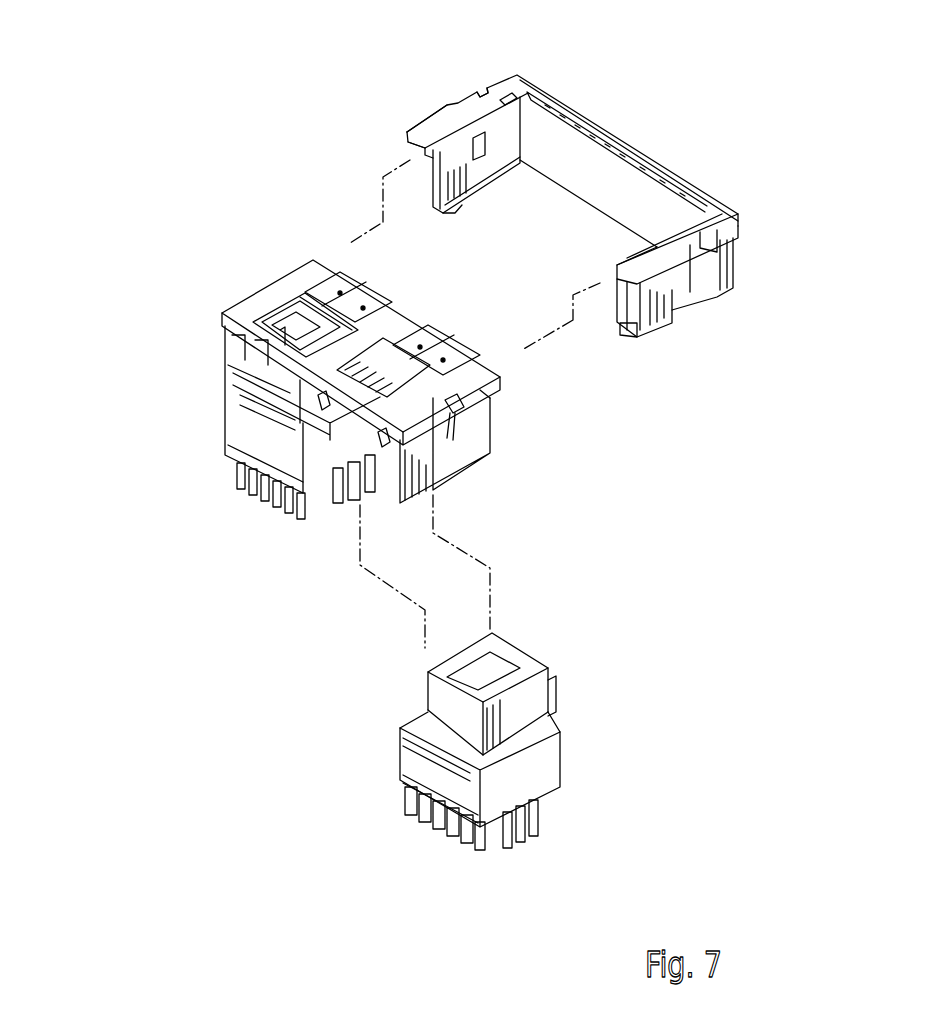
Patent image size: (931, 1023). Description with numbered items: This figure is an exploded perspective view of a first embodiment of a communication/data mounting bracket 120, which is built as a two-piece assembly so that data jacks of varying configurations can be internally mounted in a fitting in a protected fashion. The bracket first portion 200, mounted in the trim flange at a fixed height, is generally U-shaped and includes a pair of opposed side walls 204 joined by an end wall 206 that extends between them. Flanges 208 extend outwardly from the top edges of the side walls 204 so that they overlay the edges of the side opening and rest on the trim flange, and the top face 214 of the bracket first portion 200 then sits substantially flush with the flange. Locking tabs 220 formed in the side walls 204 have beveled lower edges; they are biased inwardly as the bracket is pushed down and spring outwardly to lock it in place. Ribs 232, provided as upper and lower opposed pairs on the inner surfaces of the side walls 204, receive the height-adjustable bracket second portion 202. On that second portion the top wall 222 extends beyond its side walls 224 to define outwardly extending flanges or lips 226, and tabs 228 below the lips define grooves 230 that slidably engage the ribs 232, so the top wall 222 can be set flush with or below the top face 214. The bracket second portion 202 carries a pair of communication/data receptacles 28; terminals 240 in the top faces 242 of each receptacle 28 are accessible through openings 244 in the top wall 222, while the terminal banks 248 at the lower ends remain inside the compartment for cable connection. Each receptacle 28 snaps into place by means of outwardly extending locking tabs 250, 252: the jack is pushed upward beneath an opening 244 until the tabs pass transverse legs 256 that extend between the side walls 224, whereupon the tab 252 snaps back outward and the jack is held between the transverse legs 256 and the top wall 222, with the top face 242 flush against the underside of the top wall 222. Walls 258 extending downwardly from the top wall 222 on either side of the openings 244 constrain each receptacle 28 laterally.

The mounting bracket 120 is at (238, 514).
The bracket first portion 200 is at (668, 165).
The bracket second portion 202 is at (382, 543).
The side walls 204 is at (432, 150).
The end wall 206 is at (603, 170).
The flanges 208 is at (430, 120).
The top face 214 is at (497, 88).
The locking tabs 220 is at (738, 250).
The top wall 222 is at (297, 252).
The side walls 224 is at (230, 345).
The flanges or lips 226 is at (487, 398).
The tabs 228 is at (453, 440).
The grooves 230 is at (467, 413).
The ribs 232 is at (540, 92).
The terminals 240 is at (258, 298).
The top faces 242 is at (233, 307).
The openings 244 is at (388, 328).
The terminal banks 248 is at (350, 503).
The locking tab 250 is at (233, 372).
The locking tab 252 is at (553, 688).
The transverse legs 256 is at (420, 382).
The walls 258 is at (227, 363).
The communication/data receptacle 28 is at (382, 534).